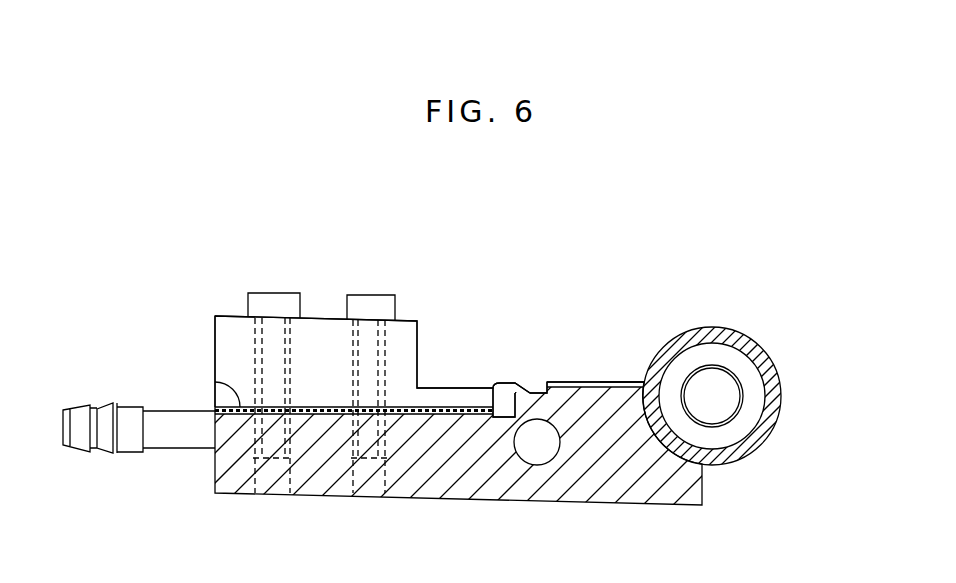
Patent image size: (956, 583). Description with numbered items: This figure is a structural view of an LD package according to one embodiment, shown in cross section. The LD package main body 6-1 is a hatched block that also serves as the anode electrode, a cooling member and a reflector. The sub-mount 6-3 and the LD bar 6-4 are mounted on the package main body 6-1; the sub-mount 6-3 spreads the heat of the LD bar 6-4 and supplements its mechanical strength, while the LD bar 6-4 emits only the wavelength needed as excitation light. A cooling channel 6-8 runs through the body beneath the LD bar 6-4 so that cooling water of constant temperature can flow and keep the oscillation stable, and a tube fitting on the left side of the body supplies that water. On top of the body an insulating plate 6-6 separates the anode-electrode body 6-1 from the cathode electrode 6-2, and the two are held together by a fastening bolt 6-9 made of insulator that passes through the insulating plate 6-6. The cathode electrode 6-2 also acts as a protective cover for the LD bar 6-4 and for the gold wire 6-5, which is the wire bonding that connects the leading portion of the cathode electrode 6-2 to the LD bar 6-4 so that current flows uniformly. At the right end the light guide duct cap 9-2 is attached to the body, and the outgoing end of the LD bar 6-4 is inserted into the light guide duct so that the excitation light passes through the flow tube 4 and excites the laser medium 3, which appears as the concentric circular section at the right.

The LD package main body 6-1 is at (452, 502).
The cathode electrode 6-2 is at (227, 317).
The sub-mount 6-3 is at (538, 385).
The LD bar 6-4 is at (552, 383).
The gold wire 6-5 is at (500, 383).
The insulating plate 6-6 is at (215, 382).
The cooling channel 6-8 is at (542, 455).
The fastening bolt 6-9 is at (278, 293).
The light guide duct cap 9-2 is at (608, 383).
The laser medium 3 is at (742, 410).
The flow tube 4 is at (738, 452).